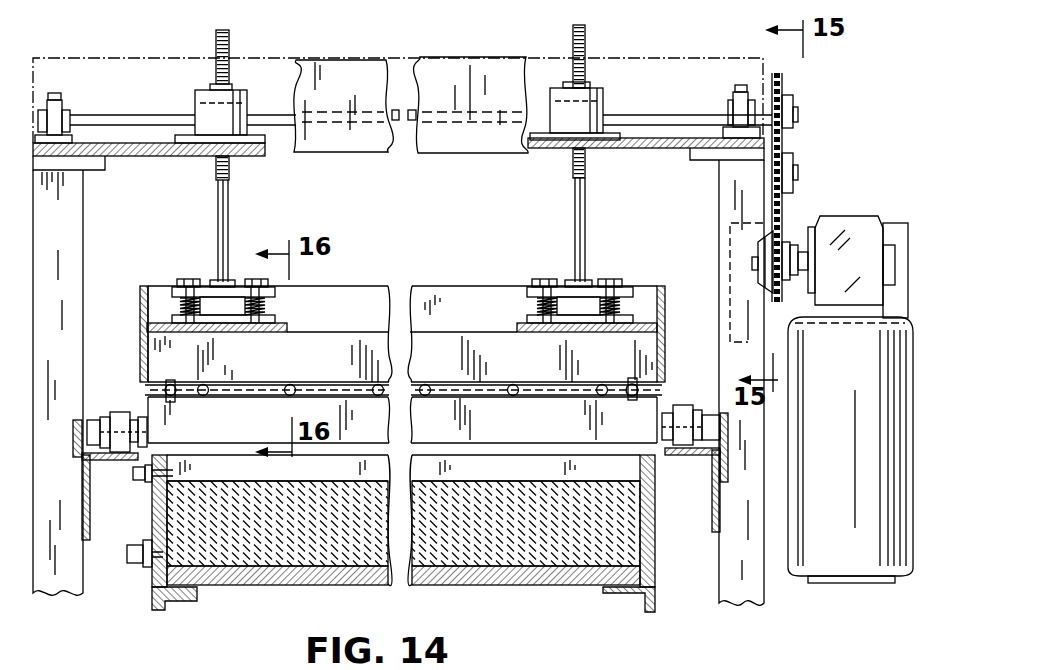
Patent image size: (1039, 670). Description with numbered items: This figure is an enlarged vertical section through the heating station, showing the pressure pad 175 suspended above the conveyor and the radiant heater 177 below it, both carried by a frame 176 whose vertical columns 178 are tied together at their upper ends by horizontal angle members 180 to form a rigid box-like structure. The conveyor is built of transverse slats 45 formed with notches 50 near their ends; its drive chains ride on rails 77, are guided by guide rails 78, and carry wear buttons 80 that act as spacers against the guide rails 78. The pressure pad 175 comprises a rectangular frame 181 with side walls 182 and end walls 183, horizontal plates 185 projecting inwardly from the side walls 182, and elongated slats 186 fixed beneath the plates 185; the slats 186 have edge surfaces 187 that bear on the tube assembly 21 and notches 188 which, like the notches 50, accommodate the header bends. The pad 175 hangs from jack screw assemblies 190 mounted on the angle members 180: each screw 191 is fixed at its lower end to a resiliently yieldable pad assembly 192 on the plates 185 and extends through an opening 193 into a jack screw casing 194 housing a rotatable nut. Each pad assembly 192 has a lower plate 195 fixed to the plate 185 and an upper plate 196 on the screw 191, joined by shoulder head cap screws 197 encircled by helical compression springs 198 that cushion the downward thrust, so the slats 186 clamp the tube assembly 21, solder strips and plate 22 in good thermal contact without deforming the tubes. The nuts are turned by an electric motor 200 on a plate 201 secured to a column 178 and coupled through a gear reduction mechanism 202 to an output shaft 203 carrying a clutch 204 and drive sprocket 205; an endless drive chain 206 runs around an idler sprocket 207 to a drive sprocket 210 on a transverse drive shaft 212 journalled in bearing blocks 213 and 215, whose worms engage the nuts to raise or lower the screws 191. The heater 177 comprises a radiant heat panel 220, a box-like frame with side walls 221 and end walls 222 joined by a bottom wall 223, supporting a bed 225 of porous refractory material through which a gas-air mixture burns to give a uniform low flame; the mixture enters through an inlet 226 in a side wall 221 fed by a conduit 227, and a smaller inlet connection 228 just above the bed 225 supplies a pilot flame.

The tube assembly 21 is at (372, 376).
The plate 22 is at (334, 398).
The slats 45 is at (447, 432).
The notches 50 is at (170, 380).
The rails 77 is at (117, 462).
The guide rails 78 is at (76, 428).
The wear buttons 80 is at (87, 438).
The pressure pad 175 is at (135, 300).
The frame 176 is at (411, 404).
The radiant heater 177 is at (393, 560).
The columns 178 is at (72, 307).
The angle members 180 is at (326, 66).
The frame 181 is at (150, 281).
The side walls 182 is at (138, 352).
The end walls 183 is at (420, 290).
The horizontal plates 185 is at (272, 332).
The slats 186 is at (443, 361).
The edge surfaces 187 is at (403, 389).
The notches 188 is at (173, 398).
The jack screw assemblies 190 is at (396, 147).
The screw 191 is at (216, 35).
The pad assembly 192 is at (238, 266).
The opening 193 is at (218, 160).
The jack screw casing 194 is at (203, 112).
The lower plate 195 is at (218, 324).
The upper plate 196 is at (210, 284).
The shoulder head cap screws 197 is at (185, 282).
The helical compression spring 198 is at (182, 306).
The electric motor 200 is at (868, 578).
The plate 201 is at (895, 228).
The gear reduction mechanism 202 is at (843, 233).
The output shaft 203 is at (810, 262).
The clutch 204 is at (766, 248).
The drive sprocket 205 is at (780, 305).
The endless drive chain 206 is at (775, 240).
The idler sprocket 207 is at (790, 153).
The drive sprocket 210 is at (790, 95).
The drive shaft 212 is at (687, 113).
The bearing block 213 is at (738, 86).
The bearing block 215 is at (60, 93).
The radiant heat panel 220 is at (526, 592).
The side walls 221 is at (155, 500).
The end walls 222 is at (510, 465).
The bottom wall 223 is at (597, 580).
The bed 225 is at (283, 555).
The inlet 226 is at (157, 575).
The conduit 227 is at (127, 562).
The inlet connection 228 is at (175, 472).